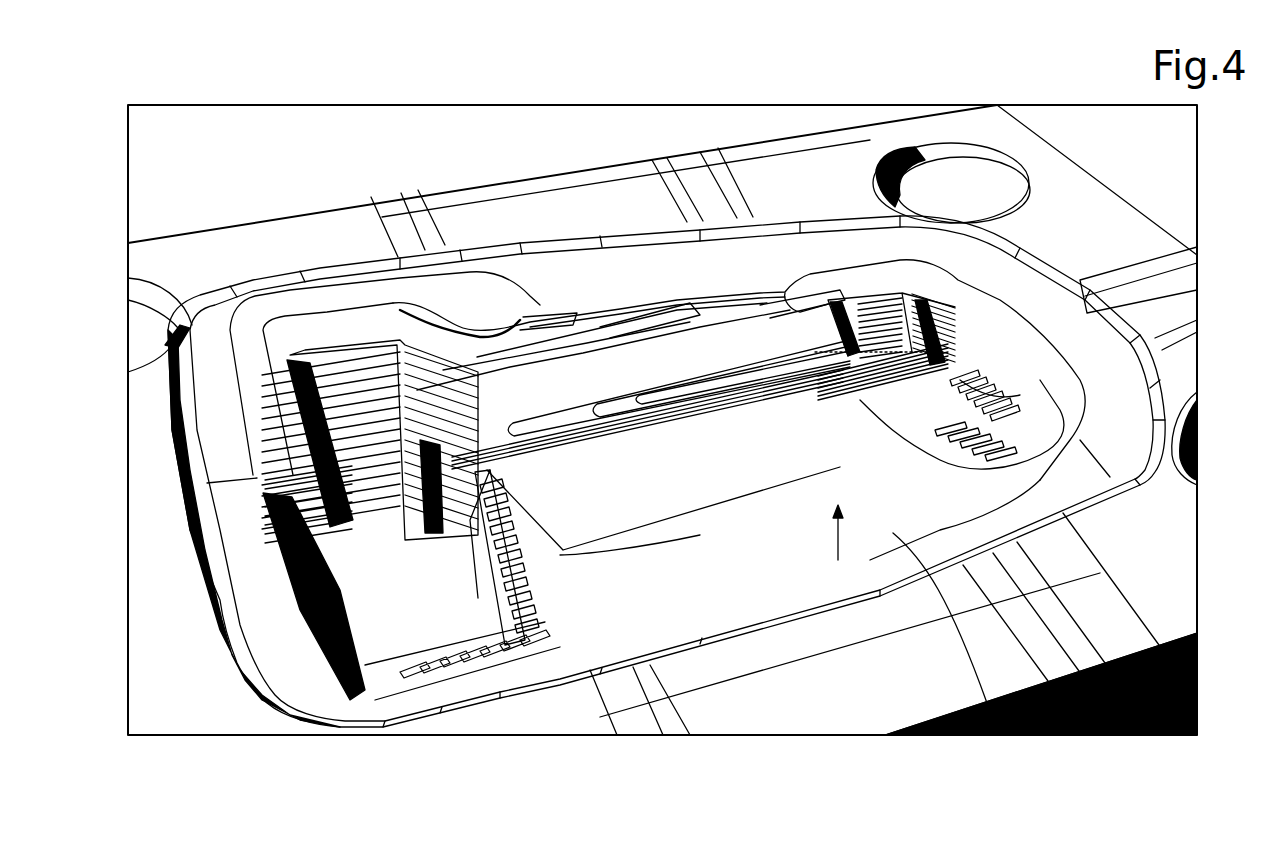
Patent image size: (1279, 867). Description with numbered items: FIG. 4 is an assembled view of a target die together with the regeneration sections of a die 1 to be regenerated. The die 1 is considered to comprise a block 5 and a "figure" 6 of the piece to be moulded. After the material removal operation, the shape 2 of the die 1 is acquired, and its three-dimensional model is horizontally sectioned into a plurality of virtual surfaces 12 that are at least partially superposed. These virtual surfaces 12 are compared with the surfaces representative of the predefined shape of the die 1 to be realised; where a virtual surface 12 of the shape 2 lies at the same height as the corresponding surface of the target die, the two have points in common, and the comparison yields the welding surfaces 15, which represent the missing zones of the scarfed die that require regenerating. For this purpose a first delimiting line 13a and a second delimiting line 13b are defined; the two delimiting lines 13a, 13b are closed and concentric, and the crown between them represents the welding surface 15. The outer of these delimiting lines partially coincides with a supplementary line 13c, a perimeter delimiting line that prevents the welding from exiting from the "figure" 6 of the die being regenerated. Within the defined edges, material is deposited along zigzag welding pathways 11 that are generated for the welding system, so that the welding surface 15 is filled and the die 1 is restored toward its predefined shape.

The die 1 is at (427, 162).
The shape 2 is at (852, 535).
The block 5 is at (1003, 727).
The figure 6 is at (647, 485).
The welding pathways 11 is at (1013, 433).
The virtual surfaces 12 is at (243, 737).
The first delimiting line 13a is at (513, 567).
The second delimiting line 13b is at (478, 600).
The supplementary line 13c is at (737, 497).
The welding surface 15 is at (1107, 470).